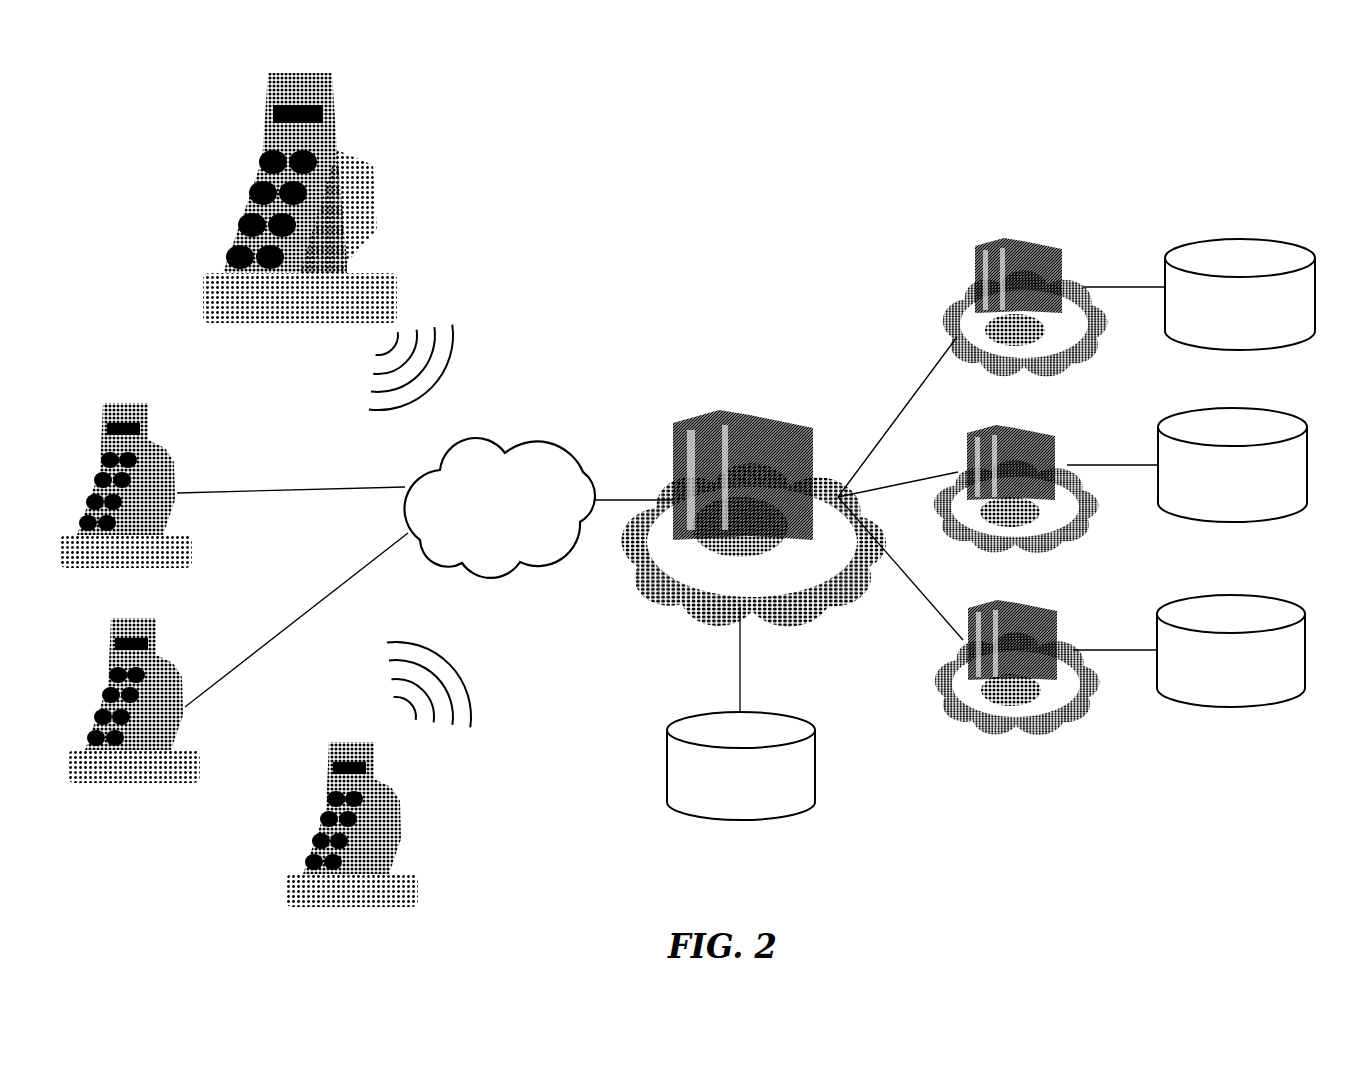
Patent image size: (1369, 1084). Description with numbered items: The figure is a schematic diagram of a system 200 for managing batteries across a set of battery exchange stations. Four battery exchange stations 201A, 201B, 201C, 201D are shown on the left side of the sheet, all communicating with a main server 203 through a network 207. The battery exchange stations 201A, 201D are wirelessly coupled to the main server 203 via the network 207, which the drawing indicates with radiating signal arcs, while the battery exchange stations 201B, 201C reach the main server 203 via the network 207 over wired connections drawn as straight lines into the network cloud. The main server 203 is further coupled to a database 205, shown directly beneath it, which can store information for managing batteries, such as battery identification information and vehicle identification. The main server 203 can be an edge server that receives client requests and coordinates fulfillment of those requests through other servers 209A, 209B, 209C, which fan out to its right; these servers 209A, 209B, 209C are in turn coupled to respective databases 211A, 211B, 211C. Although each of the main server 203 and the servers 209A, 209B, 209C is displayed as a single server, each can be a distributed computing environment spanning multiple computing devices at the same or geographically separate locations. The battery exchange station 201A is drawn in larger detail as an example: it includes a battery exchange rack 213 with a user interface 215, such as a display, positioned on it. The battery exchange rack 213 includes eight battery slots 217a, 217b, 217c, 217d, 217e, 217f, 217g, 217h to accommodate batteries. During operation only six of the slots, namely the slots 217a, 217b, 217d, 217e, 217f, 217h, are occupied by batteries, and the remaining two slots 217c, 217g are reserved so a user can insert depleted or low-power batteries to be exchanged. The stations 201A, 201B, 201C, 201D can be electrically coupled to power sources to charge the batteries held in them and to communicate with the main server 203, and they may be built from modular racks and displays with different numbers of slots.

The system 200 is at (1013, 121).
The battery exchange station 201A is at (317, 219).
The battery exchange station 201B is at (173, 460).
The battery exchange station 201C is at (172, 663).
The battery exchange station 201D is at (383, 820).
The main server 203 is at (763, 420).
The database 205 is at (792, 717).
The network 207 is at (550, 443).
The server 209A is at (1052, 248).
The server 209B is at (1043, 433).
The server 209C is at (1043, 607).
The database 211A is at (1258, 238).
The database 211B is at (1247, 407).
The database 211C is at (1245, 593).
The battery exchange rack 213 is at (288, 303).
The user interface 215 is at (313, 110).
The battery slot 217a is at (262, 160).
The battery slot 217b is at (247, 198).
The battery slot 217c is at (237, 228).
The battery slot 217d is at (233, 260).
The battery slot 217e is at (317, 163).
The battery slot 217f is at (307, 200).
The battery slot 217g is at (297, 233).
The battery slot 217h is at (278, 270).